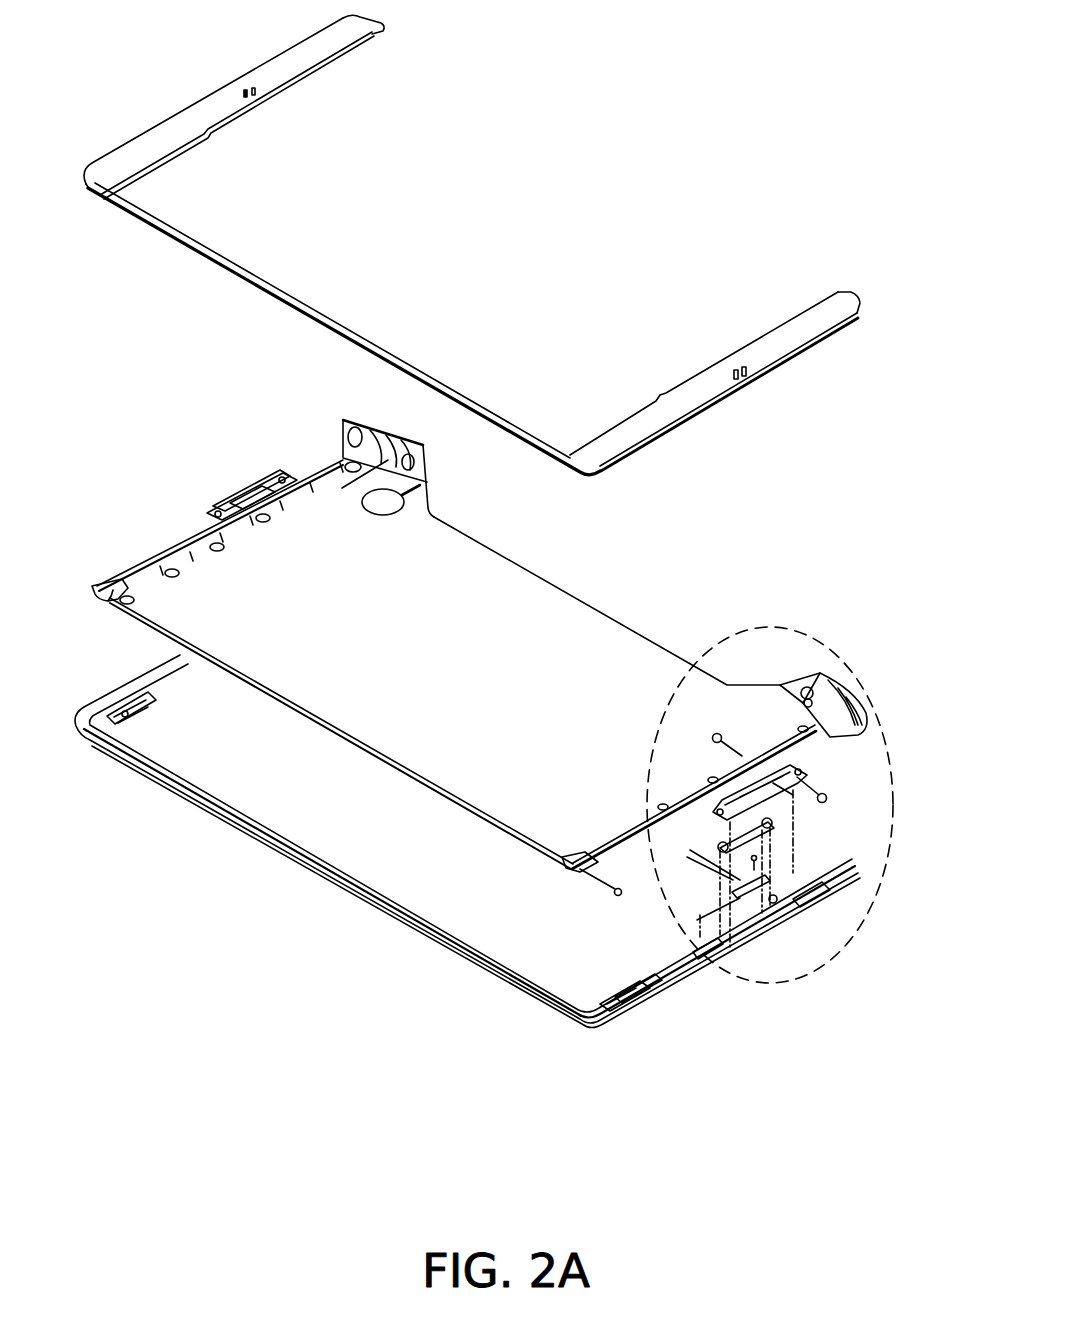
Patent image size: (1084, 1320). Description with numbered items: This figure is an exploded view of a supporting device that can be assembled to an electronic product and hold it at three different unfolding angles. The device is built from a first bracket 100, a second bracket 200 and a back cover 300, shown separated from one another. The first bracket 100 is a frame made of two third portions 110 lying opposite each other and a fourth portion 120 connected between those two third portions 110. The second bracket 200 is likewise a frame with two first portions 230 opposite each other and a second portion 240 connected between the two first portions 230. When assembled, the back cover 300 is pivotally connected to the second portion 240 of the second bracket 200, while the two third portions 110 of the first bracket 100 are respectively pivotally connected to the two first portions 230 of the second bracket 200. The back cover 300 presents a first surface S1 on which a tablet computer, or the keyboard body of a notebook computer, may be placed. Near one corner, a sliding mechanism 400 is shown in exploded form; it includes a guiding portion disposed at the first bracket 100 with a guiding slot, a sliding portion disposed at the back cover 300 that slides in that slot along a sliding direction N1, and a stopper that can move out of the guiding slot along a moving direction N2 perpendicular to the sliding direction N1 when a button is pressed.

The first bracket 100 is at (472, 245).
The third portion 110 is at (313, 58).
The fourth portion 120 is at (367, 345).
The second bracket 200 is at (453, 898).
The first portion 230 is at (138, 669).
The second portion 240 is at (420, 937).
The back cover 300 is at (511, 593).
The sliding mechanism 400 is at (838, 776).
The first surface S1 is at (575, 638).
The sliding direction N1 is at (851, 979).
The moving direction N2 is at (904, 802).